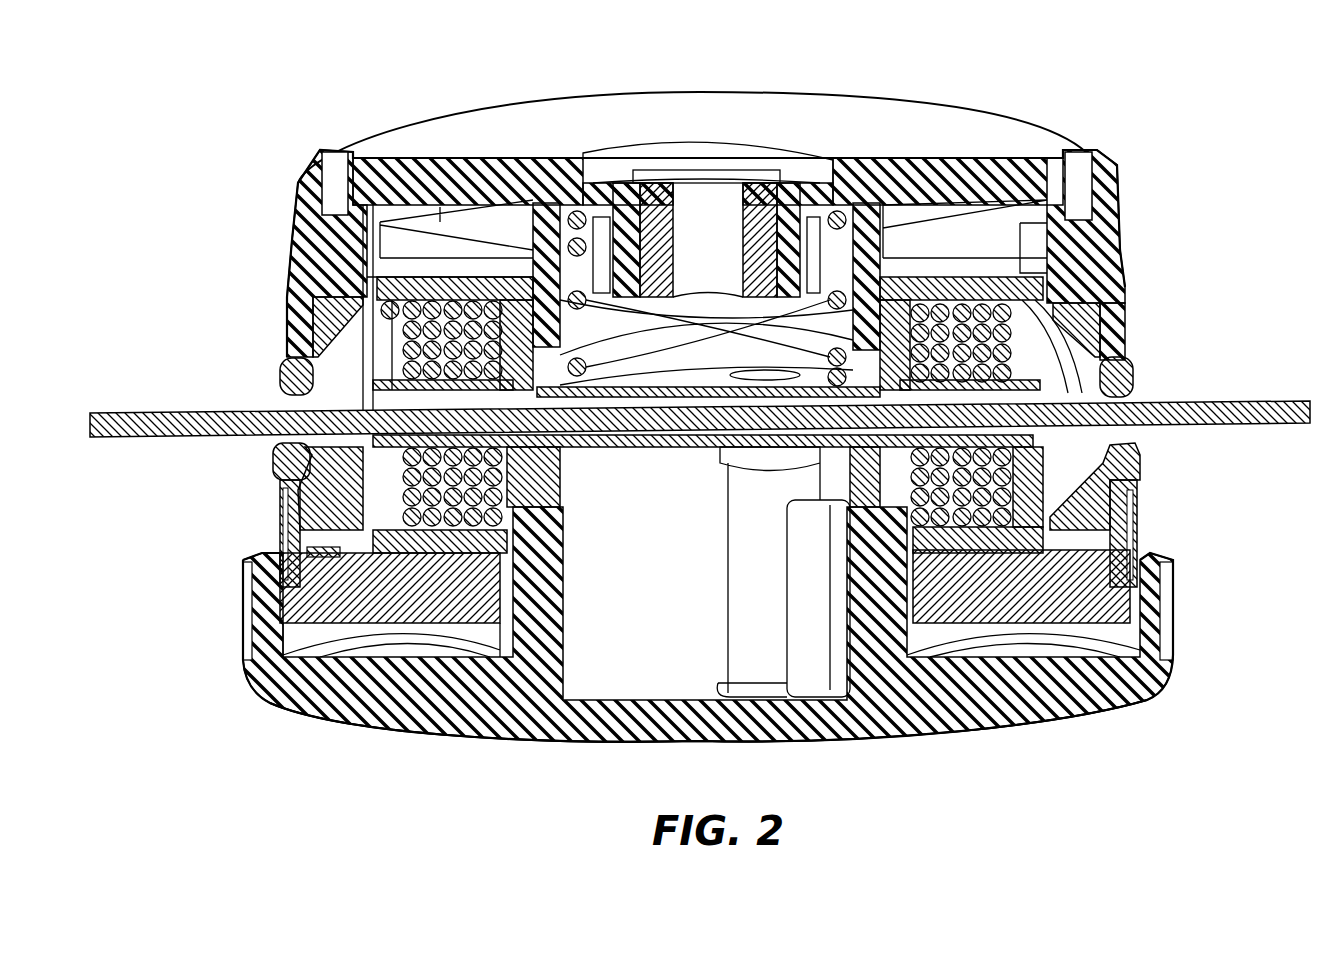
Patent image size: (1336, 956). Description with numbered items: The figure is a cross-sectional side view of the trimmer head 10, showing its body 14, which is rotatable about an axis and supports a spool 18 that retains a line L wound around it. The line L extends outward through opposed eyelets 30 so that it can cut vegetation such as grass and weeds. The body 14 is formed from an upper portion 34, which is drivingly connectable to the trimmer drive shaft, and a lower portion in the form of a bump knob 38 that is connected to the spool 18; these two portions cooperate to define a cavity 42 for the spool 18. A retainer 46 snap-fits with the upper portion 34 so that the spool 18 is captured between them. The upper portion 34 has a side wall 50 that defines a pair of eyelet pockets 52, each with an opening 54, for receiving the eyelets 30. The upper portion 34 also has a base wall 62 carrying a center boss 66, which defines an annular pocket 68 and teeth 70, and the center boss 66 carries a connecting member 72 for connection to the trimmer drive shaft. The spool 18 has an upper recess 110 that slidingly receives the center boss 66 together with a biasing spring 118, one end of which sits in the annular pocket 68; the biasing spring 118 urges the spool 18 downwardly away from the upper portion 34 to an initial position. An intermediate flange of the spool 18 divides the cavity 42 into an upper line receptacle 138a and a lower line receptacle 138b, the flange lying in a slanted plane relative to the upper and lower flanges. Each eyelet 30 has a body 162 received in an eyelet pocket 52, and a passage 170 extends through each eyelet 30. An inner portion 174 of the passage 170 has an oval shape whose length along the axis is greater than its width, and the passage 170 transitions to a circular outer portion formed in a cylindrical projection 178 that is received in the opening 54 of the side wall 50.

The trimmer head 10 is at (248, 128).
The body 14 is at (1205, 604).
The spool 18 is at (500, 545).
The eyelet 30 is at (300, 375).
The upper portion 34 is at (1025, 128).
The bump knob 38 is at (1000, 700).
The cavity 42 is at (418, 245).
The retainer 46 is at (430, 618).
The side wall 50 is at (1115, 208).
The eyelet pocket 52 is at (1133, 308).
The opening 54 is at (1160, 482).
The base wall 62 is at (838, 110).
The center boss 66 is at (533, 237).
The annular pocket 68 is at (814, 215).
The teeth 70 is at (428, 200).
The connecting member 72 is at (742, 215).
The upper recess 110 is at (860, 320).
The biasing spring 118 is at (557, 233).
The upper line receptacle 138a is at (365, 240).
The lower line receptacle 138b is at (415, 570).
The eyelet body 162 is at (1130, 340).
The passage 170 is at (1137, 390).
The inner portion 174 is at (290, 405).
The projection 178 is at (290, 455).
The line L is at (152, 443).